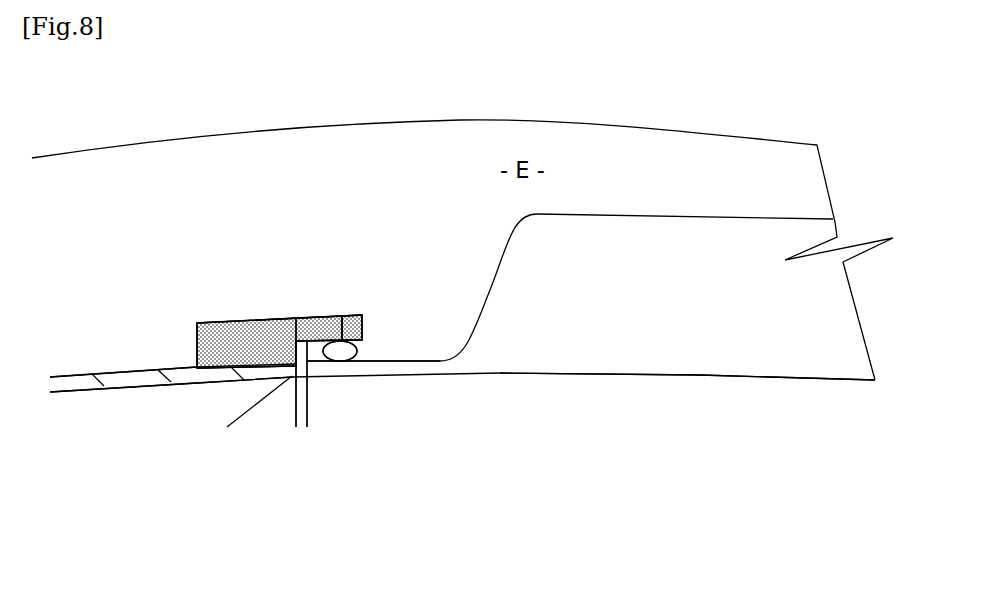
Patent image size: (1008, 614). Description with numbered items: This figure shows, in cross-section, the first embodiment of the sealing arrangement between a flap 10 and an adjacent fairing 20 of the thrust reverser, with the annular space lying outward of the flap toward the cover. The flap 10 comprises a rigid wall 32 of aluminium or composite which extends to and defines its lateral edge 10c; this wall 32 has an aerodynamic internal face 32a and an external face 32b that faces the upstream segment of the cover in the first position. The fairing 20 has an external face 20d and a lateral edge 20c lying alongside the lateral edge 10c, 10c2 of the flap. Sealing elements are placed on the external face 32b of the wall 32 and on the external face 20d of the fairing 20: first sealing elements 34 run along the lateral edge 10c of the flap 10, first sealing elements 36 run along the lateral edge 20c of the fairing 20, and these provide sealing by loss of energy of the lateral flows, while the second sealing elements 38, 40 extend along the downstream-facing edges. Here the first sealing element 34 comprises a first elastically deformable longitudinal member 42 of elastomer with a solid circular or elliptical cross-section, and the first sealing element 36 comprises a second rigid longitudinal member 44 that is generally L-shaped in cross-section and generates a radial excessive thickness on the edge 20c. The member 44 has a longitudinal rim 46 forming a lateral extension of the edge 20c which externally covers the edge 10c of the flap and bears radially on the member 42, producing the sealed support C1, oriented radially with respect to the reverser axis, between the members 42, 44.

The flap 10 is at (620, 385).
The lateral edge 10c is at (310, 378).
The flange end portion 10c2 is at (384, 427).
The fairing 20 is at (133, 405).
The lateral edge 20c is at (293, 376).
The external face 20d is at (142, 368).
The rigid wall 32 is at (525, 353).
The aerodynamic internal face 32a is at (728, 376).
The external face 32b is at (412, 360).
The first sealing element 34 is at (362, 350).
The second sealing element 38 is at (397, 296).
The first sealing element 36 is at (239, 314).
The second sealing element 40 is at (279, 271).
The first elastically deformable longitudinal member 42 is at (347, 316).
The second rigid longitudinal member 44 is at (217, 323).
The longitudinal rim 46 is at (315, 317).
The sealed support C1 is at (347, 316).